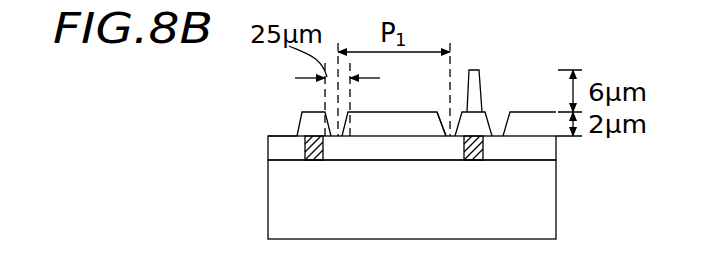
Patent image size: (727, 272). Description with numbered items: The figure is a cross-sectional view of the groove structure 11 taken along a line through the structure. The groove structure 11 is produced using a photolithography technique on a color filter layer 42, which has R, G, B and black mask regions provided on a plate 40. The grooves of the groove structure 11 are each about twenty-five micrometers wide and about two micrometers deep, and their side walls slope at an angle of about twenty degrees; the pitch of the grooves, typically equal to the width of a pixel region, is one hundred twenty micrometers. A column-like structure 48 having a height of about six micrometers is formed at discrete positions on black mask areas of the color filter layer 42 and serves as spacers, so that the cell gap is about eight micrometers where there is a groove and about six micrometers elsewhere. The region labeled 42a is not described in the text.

The groove structure 11 is at (291, 118).
The plate 40 is at (288, 208).
The color filter layer 42 is at (273, 151).
The top surface of insulating layer 42a is at (274, 136).
The column-like structure 48 is at (475, 84).